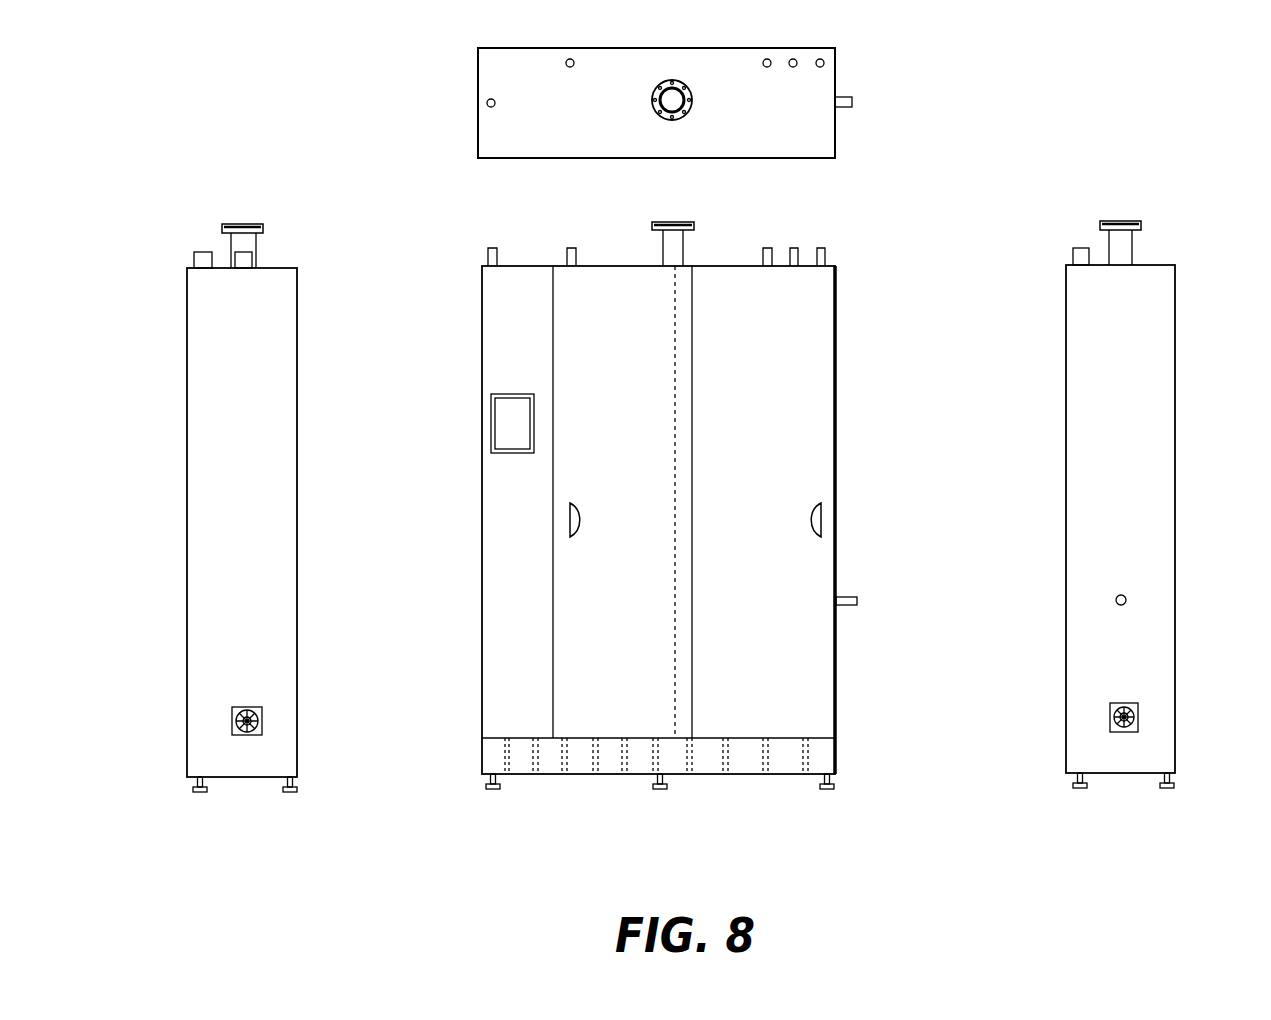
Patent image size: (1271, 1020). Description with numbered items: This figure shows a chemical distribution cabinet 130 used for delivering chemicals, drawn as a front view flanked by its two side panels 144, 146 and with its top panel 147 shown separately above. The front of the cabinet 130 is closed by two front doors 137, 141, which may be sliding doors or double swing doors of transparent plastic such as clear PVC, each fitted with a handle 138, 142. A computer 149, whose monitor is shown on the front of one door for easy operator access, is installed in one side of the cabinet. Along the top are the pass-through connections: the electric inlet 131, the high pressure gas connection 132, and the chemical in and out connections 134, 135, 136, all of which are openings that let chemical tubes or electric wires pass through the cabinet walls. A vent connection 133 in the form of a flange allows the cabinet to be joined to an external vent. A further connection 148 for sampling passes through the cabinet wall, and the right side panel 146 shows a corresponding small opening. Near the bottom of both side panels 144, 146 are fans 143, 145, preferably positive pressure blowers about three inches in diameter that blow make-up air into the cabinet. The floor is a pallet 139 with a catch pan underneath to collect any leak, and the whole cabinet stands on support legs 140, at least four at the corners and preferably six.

The cabinet 130 is at (482, 320).
The electric inlet 131 is at (493, 248).
The high pressure gas connection 132 is at (572, 248).
The vent connection 133 is at (676, 222).
The chemical in and out connection 134 is at (767, 248).
The chemical in and out connection 135 is at (797, 248).
The chemical in and out connection 136 is at (828, 250).
The front door 137 is at (871, 520).
The handle 138 is at (823, 514).
The floor pallet with catch pan 139 is at (727, 755).
The support leg 140 is at (658, 787).
The front door 141 is at (630, 647).
The handle 142 is at (570, 523).
The fan 143 is at (232, 722).
The side panel 144 is at (232, 457).
The fan 145 is at (1140, 718).
The side panel 146 is at (1143, 472).
The top panel 147 is at (815, 120).
The connection for sampling 148 is at (847, 605).
The computer 149 is at (497, 423).